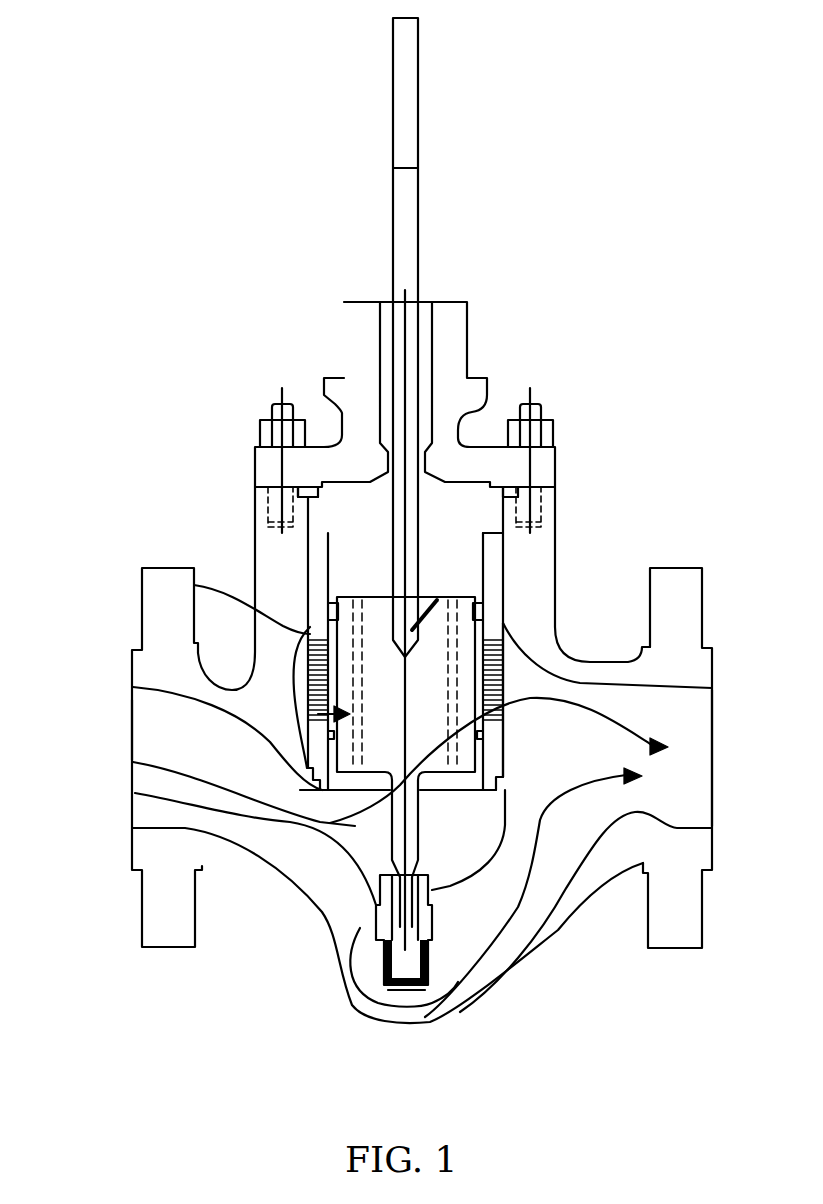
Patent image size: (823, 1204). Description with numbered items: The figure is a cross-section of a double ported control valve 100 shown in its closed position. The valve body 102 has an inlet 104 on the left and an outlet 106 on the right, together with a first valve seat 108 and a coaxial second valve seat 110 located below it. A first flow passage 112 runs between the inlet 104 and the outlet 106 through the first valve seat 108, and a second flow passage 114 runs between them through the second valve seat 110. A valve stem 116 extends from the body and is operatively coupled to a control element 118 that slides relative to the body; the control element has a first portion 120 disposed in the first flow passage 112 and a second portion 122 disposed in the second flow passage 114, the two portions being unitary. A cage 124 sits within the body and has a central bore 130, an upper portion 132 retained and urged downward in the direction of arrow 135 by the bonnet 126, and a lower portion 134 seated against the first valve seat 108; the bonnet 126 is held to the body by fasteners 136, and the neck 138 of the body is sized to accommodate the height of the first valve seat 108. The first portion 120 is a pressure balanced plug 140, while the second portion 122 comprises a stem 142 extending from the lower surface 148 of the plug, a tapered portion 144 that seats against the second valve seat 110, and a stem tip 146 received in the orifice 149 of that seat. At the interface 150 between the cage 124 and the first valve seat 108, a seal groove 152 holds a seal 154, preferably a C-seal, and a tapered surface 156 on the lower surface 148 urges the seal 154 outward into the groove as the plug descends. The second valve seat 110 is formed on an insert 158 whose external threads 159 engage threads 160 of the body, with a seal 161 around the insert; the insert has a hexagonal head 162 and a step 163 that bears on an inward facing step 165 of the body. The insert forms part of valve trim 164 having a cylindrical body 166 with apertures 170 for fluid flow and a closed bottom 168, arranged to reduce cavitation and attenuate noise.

The double ported control valve 100 is at (696, 176).
The valve body 102 is at (713, 590).
The inlet 104 is at (133, 700).
The outlet 106 is at (713, 697).
The first valve seat 108 is at (288, 762).
The second valve seat 110 is at (386, 873).
The first flow passage 112 is at (135, 793).
The second flow passage 114 is at (355, 826).
The valve stem 116 is at (420, 207).
The control element 118 is at (320, 713).
The first portion 120 is at (376, 607).
The second portion 122 is at (500, 800).
The cage 124 is at (312, 557).
The bonnet 126 is at (262, 455).
The central bore 130 is at (505, 535).
The upper portion 132 is at (300, 492).
The lower portion 134 is at (310, 673).
The arrow 135 is at (29, 620).
The fasteners 136 is at (545, 430).
The neck 138 is at (545, 578).
The plug 140 is at (190, 575).
The stem 142 is at (482, 798).
The tapered portion 144 is at (430, 868).
The stem tip 146 is at (433, 880).
The lower surface 148 is at (487, 788).
The orifice 149 is at (382, 948).
The interface 150 is at (503, 727).
The seal groove 152 is at (505, 750).
The seal 154 is at (310, 760).
The tapered surface 156 is at (340, 811).
The insert 158 is at (382, 990).
The external threads 159 is at (377, 905).
The threads 160 is at (378, 880).
The seal 161 is at (433, 907).
The head 162 is at (381, 892).
The step 163 is at (470, 1010).
The valve trim 164 is at (452, 998).
The inward facing step 165 is at (377, 930).
The cylindrical body 166 is at (380, 990).
The bottom 168 is at (428, 990).
The apertures 170 is at (442, 978).